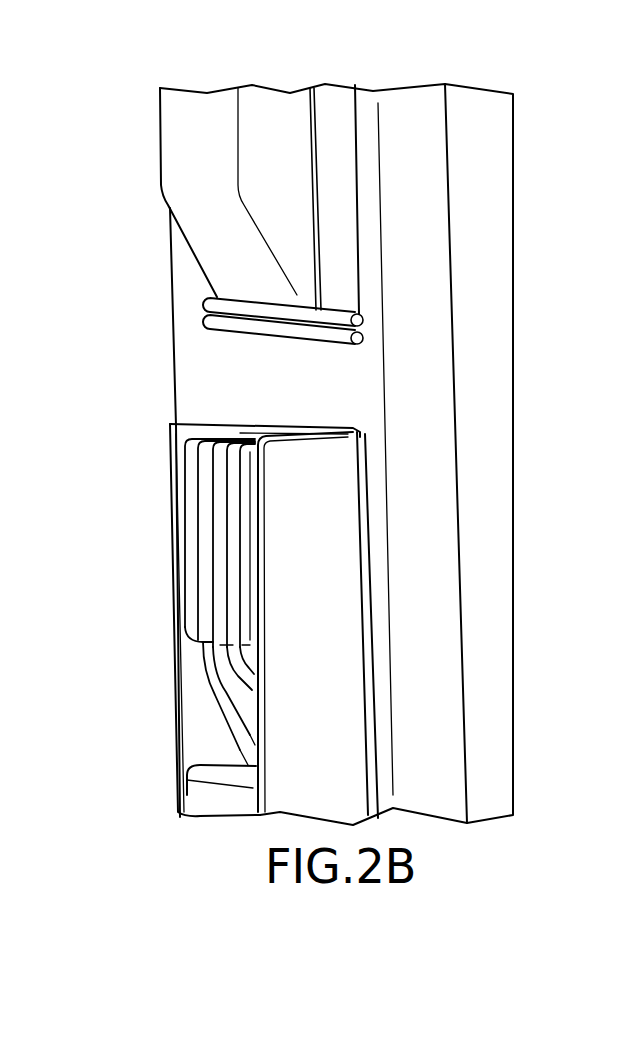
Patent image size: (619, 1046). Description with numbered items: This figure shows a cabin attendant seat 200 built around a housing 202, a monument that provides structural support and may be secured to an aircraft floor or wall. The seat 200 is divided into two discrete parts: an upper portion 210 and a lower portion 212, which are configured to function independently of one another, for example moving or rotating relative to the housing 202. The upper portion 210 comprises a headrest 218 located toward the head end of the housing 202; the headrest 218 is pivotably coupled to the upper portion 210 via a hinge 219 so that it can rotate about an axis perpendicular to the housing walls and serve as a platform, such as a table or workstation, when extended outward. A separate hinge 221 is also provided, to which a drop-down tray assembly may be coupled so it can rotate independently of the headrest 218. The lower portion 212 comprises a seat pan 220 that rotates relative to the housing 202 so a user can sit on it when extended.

The cabin attendant seat 200 is at (185, 64).
The upper portion 210 is at (450, 208).
The headrest 218 is at (215, 158).
The housing 202 is at (198, 370).
The hinge 219 is at (363, 322).
The separate hinge 221 is at (363, 339).
The lower portion 212 is at (435, 511).
The seat pan 220 is at (203, 517).